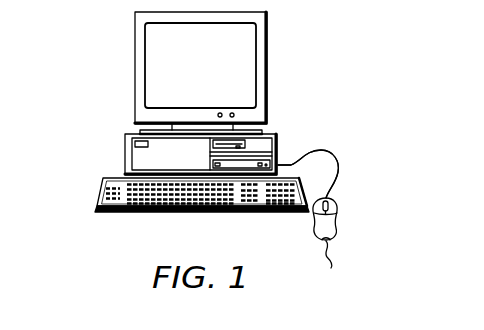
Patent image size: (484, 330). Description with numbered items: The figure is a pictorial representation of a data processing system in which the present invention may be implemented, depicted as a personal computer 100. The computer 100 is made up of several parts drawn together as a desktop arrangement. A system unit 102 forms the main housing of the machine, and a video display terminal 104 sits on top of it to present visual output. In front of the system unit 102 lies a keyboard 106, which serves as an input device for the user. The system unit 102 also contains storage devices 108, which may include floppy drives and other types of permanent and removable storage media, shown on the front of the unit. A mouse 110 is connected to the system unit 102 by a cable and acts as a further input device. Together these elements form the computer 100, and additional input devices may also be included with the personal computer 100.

The computer 100 is at (80, 60).
The system unit 102 is at (124, 155).
The video display terminal 104 is at (269, 69).
The keyboard 106 is at (118, 215).
The storage devices 108 is at (303, 128).
The mouse 110 is at (312, 222).